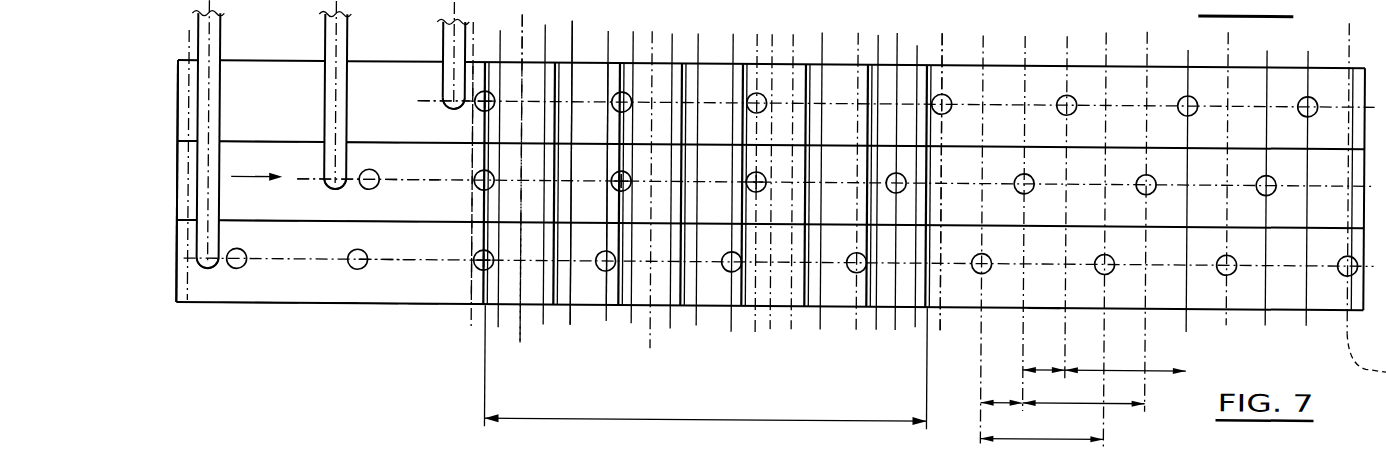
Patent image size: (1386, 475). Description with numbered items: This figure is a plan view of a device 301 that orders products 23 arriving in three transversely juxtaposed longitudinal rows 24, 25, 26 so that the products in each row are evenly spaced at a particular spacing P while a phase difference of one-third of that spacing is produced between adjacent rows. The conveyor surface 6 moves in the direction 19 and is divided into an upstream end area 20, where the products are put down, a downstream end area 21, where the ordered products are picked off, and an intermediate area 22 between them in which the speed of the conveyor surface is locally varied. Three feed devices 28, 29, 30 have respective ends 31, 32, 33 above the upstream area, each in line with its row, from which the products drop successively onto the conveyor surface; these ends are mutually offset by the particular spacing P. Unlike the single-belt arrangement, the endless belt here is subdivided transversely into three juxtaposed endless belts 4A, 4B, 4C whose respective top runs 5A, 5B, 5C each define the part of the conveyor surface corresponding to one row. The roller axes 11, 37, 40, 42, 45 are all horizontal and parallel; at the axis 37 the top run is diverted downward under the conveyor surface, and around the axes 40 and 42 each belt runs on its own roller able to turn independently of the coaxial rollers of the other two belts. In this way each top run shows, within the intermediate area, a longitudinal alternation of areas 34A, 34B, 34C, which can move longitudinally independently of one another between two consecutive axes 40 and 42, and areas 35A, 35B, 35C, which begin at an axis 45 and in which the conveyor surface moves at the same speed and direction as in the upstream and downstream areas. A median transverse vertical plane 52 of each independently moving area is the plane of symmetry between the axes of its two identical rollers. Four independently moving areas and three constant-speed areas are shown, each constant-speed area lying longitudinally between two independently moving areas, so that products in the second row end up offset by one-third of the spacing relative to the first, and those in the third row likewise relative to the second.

The endless belt 4A is at (268, 292).
The endless belt 4B is at (290, 203).
The endless belt 4C is at (262, 118).
The top run 5A is at (366, 294).
The top run 5B is at (386, 206).
The top run 5C is at (360, 123).
The conveyor surface 6 is at (424, 295).
The axis 11 is at (192, 318).
The direction 19 is at (247, 182).
The upstream end area 20 is at (342, 294).
The downstream end area 21 is at (1043, 303).
The intermediate area 22 is at (705, 367).
The products 23 is at (246, 251).
The row 24 is at (390, 262).
The row 25 is at (405, 171).
The row 26 is at (432, 97).
The feed device 28 is at (222, 38).
The feed device 29 is at (349, 38).
The feed device 30 is at (466, 33).
The end 31 is at (209, 271).
The end 32 is at (340, 190).
The end 33 is at (447, 111).
The area 34A is at (525, 290).
The area 34B is at (525, 205).
The area 34C is at (523, 123).
The area 35A is at (578, 290).
The area 35B is at (578, 205).
The area 35C is at (580, 128).
The horizontal axis 37 is at (471, 340).
The horizontal axis 40 is at (498, 330).
The axis 42 is at (543, 345).
The horizontal axis 45 is at (571, 335).
The median transverse vertical plane 52 is at (519, 335).
The device 301 is at (183, 306).
The particular spacing P is at (1083, 391).